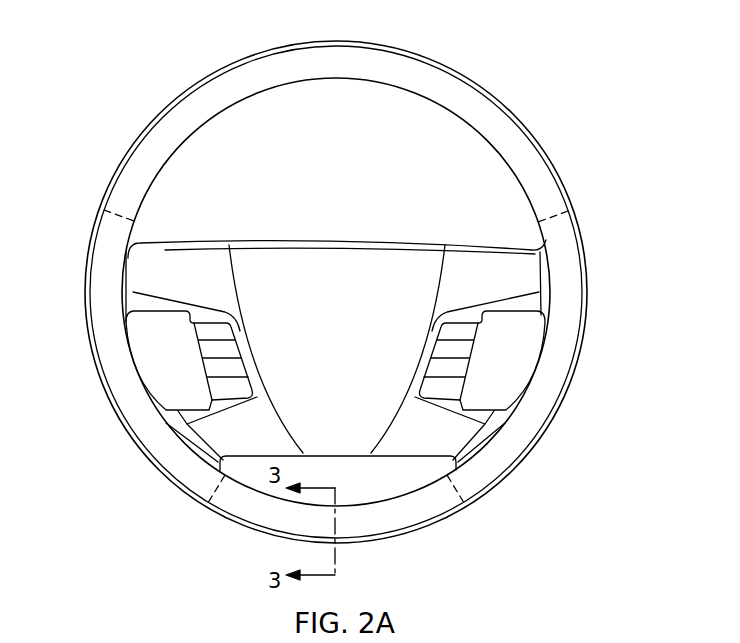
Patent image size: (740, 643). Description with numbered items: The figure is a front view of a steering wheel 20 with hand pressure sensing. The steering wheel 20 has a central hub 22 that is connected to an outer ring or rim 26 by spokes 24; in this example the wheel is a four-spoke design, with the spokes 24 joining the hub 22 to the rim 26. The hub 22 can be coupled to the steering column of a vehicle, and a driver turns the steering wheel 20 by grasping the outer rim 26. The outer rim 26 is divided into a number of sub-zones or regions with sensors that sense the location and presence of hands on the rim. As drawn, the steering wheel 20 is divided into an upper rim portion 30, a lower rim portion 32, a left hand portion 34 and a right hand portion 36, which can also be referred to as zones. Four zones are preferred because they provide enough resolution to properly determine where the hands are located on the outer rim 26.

The steering wheel 20 is at (126, 89).
The central hub 22 is at (334, 258).
The spokes 24 is at (157, 267).
The outer rim 26 is at (97, 300).
The upper rim portion 30 is at (342, 50).
The lower rim portion 32 is at (405, 518).
The left hand portion 34 is at (117, 387).
The right hand portion 36 is at (567, 368).